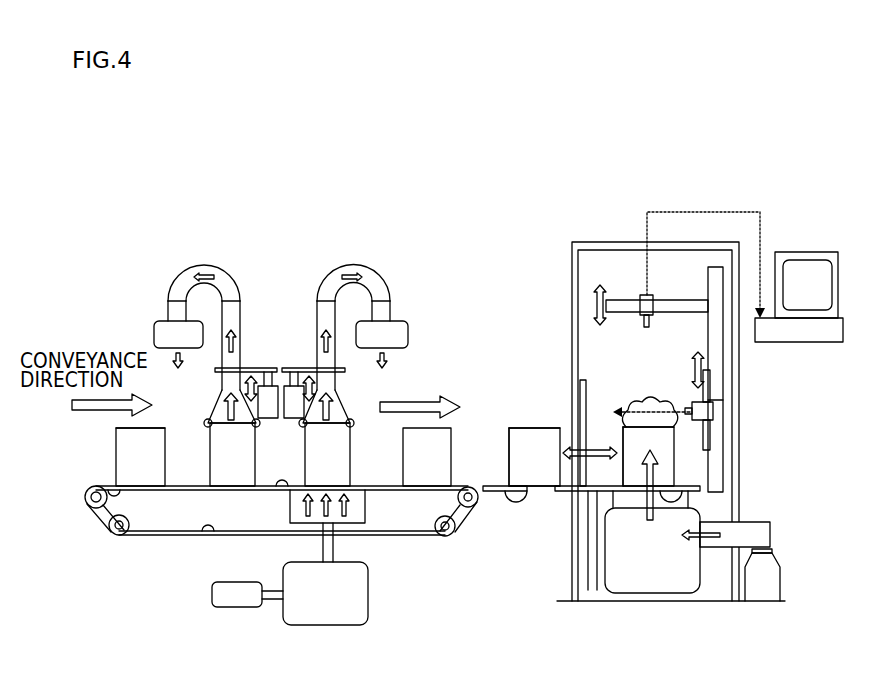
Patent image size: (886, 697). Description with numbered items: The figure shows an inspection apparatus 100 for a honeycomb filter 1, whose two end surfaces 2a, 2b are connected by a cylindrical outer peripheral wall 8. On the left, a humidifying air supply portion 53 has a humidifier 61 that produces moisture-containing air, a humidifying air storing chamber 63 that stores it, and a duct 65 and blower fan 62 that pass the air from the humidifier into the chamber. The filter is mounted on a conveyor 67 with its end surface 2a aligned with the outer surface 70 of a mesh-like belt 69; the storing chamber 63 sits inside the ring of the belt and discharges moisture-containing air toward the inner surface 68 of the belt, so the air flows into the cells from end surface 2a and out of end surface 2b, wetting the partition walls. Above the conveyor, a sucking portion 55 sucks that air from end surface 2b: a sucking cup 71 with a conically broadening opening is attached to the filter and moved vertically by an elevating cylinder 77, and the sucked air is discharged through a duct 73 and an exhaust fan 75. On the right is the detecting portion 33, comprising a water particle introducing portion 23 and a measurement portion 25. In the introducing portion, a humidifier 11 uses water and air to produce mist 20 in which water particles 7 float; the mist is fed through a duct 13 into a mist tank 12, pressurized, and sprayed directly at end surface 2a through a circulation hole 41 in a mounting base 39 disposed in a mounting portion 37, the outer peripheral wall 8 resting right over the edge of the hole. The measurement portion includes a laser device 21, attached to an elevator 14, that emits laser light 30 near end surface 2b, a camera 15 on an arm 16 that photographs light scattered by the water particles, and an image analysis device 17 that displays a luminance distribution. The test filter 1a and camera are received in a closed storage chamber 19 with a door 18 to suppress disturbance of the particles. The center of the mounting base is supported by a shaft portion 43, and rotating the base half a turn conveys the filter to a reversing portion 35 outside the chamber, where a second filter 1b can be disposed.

The inspection apparatus 100 is at (815, 40).
The sucking portion 55 is at (386, 258).
The duct 73 is at (325, 317).
The exhaust fan 75 is at (393, 335).
The sucking cup 71 is at (335, 407).
The elevating cylinder 77 is at (289, 424).
The honeycomb filter 1 is at (133, 452).
The honeycomb filter 1a is at (617, 428).
The honeycomb filter 1b is at (534, 420).
The end surface 2a is at (110, 495).
The end surface 2b is at (130, 428).
The conveyor 67 is at (106, 550).
The belt 69 is at (162, 536).
The inner surface 68 is at (212, 533).
The outer surface 70 is at (286, 492).
The humidifying air storing chamber 63 is at (357, 510).
The duct 65 is at (335, 547).
The humidifier 61 is at (328, 617).
The blower fan 62 is at (237, 600).
The humidifying air supply portion 53 is at (389, 611).
The storage chamber 19 is at (603, 243).
The arm 16 is at (690, 305).
The camera 15 is at (653, 312).
The elevator 14 is at (715, 352).
The image analysis device 17 is at (825, 342).
The door 18 is at (580, 440).
The laser device 21 is at (716, 412).
The measurement portion 25 is at (736, 414).
The water particle introducing portion 23 is at (712, 514).
The detecting portion 33 is at (824, 438).
The duct 13 is at (770, 537).
The humidifier 11 is at (770, 583).
The mist tank 12 is at (660, 580).
The shaft portion 43 is at (598, 575).
The mounting base 39 is at (493, 491).
The mounting portion 37 is at (466, 592).
The reversing portion 35 is at (522, 510).
The circulation hole 41 is at (640, 490).
The outer peripheral wall 8 is at (515, 453).
The laser light 30 is at (616, 411).
The water particles 7 is at (640, 405).
The mist 20 is at (649, 412).